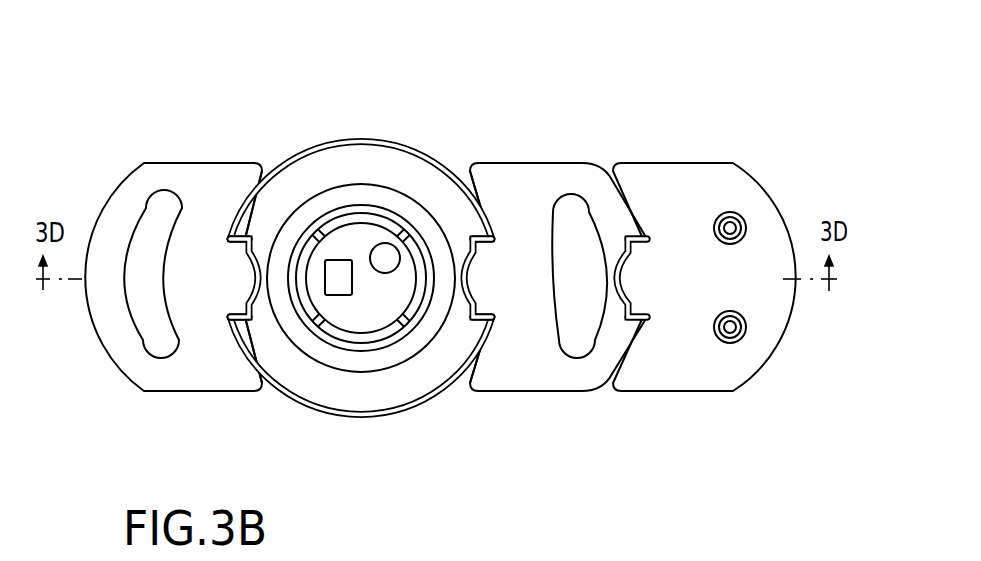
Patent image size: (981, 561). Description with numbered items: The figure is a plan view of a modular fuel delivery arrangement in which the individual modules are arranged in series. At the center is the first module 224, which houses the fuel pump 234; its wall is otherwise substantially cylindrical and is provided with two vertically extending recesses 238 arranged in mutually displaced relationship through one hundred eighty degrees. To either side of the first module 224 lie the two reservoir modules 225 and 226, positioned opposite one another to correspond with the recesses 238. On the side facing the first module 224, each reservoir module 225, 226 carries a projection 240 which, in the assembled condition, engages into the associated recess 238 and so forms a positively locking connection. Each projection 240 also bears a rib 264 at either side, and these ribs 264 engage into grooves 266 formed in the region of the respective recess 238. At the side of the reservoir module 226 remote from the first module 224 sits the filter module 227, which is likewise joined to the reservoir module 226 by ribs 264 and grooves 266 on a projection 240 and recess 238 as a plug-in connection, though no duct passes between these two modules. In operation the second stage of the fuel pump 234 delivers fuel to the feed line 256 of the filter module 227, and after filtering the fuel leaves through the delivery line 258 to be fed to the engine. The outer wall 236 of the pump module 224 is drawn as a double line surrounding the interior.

The first module 224 is at (430, 146).
The reservoir module 225 is at (143, 393).
The reservoir module 226 is at (562, 392).
The filter module 227 is at (697, 393).
The fuel pump 234 is at (370, 314).
The outer ring wall 236 is at (436, 396).
The recess 238 is at (463, 266).
The projection 240 is at (250, 277).
The feed line 256 is at (743, 341).
The delivery line 258 is at (738, 214).
The rib 264 is at (243, 232).
The groove 266 is at (252, 240).